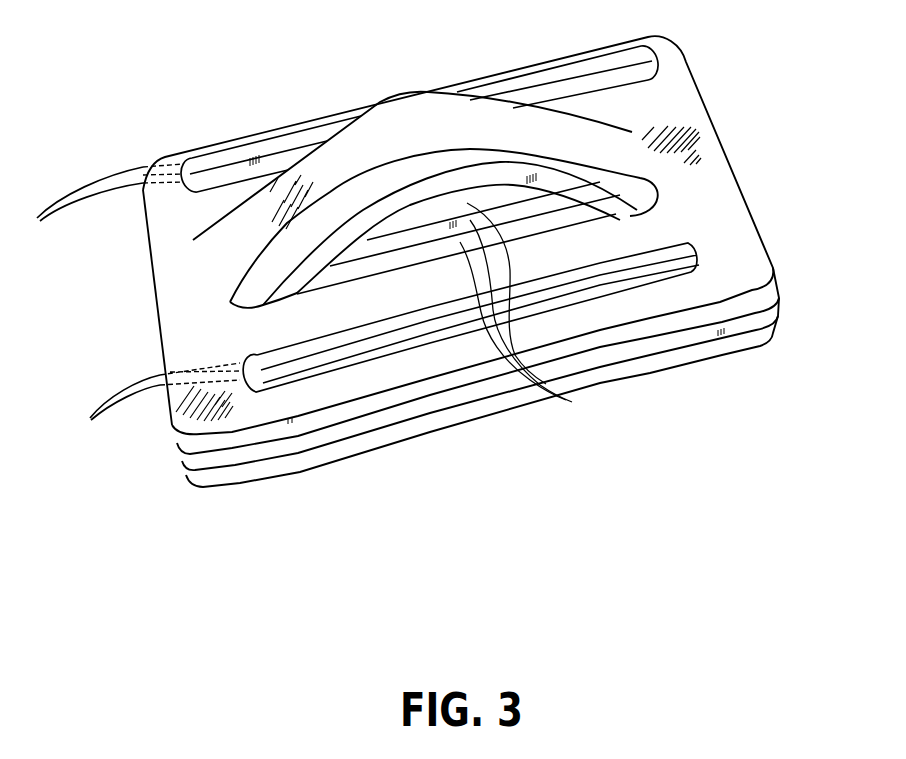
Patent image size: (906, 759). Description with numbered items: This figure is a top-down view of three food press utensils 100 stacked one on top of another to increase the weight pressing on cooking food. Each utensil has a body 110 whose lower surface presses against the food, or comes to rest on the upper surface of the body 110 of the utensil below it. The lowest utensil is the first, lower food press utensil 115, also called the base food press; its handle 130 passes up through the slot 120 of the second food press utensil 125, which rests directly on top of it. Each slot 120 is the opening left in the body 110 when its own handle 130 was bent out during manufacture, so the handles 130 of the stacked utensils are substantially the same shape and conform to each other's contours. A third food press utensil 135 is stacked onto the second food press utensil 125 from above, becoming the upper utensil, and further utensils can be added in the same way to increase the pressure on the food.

The food press utensil 100 is at (121, 118).
The body 110 is at (733, 230).
The first, lower food press utensil 115 is at (768, 314).
The slot 120 is at (315, 309).
The second food press utensil 125 is at (775, 291).
The handle 130 is at (593, 134).
The third food press utensil 135 is at (772, 277).